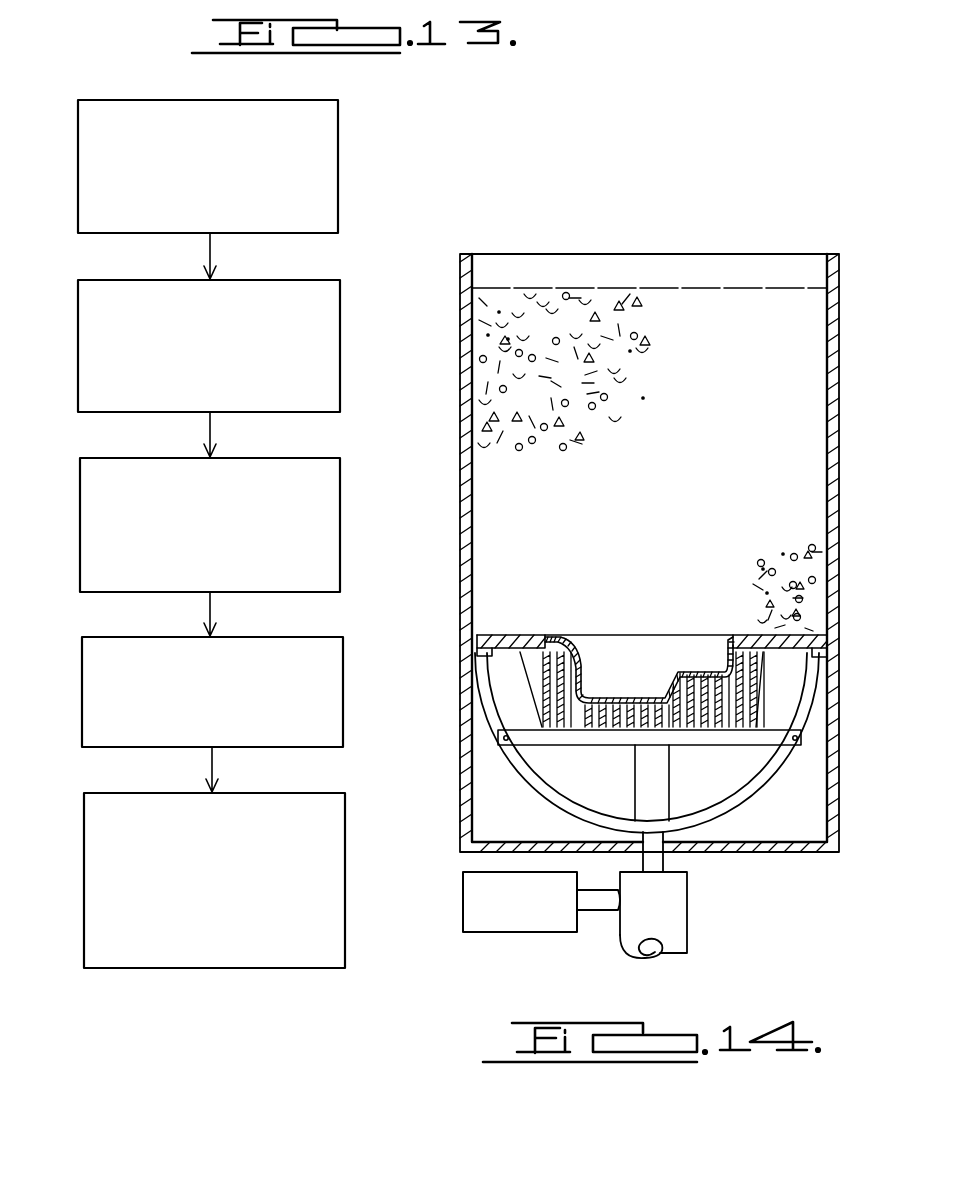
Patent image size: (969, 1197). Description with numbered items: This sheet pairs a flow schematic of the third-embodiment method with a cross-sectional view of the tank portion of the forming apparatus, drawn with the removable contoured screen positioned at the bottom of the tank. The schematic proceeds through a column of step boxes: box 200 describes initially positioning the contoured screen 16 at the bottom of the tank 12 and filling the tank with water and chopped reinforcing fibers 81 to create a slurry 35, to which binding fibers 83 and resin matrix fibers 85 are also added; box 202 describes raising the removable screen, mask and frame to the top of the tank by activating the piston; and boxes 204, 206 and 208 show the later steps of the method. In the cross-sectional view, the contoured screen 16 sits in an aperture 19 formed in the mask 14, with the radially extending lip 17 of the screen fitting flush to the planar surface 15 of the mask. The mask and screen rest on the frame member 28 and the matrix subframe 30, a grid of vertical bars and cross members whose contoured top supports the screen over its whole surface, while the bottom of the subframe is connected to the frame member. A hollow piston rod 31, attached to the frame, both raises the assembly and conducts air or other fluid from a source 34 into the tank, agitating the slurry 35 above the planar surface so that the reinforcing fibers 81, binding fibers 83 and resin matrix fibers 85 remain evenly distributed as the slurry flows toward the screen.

In FIG. 13, the box 200 is at (78, 147).
In FIG. 13, the box 202 is at (78, 340).
In FIG. 13, the placing screen and preform in oven step 204 is at (80, 537).
In FIG. 13, the removing tackified preform from screen step 206 is at (82, 697).
In FIG. 13, the placing tackified preform in mold and melting step 208 is at (84, 862).
In FIG. 14, the tank 12 is at (460, 518).
In FIG. 14, the mask 14 is at (507, 652).
In FIG. 14, the planar surface 15 is at (765, 632).
In FIG. 14, the contoured screen 16 is at (585, 730).
In FIG. 14, the radially extending lip 17 is at (653, 682).
In FIG. 14, the aperture 19 is at (557, 635).
In FIG. 14, the frame member 28 is at (572, 805).
In FIG. 14, the matrix subframe 30 is at (772, 697).
In FIG. 14, the hollow piston rod 31 is at (656, 858).
In FIG. 14, the source 34 is at (490, 932).
In FIG. 14, the slurry 35 is at (490, 557).
In FIG. 14, the reinforcing fibers 81 is at (646, 330).
In FIG. 14, the binding fibers 83 is at (567, 292).
In FIG. 14, the resin matrix fibers 85 is at (503, 346).